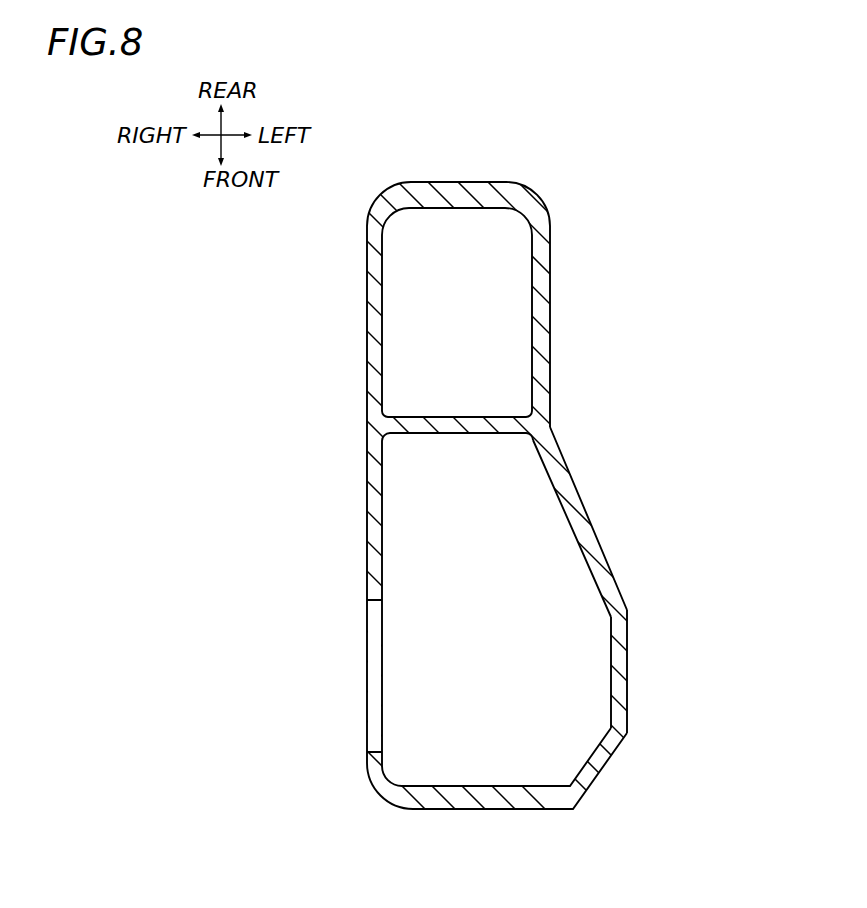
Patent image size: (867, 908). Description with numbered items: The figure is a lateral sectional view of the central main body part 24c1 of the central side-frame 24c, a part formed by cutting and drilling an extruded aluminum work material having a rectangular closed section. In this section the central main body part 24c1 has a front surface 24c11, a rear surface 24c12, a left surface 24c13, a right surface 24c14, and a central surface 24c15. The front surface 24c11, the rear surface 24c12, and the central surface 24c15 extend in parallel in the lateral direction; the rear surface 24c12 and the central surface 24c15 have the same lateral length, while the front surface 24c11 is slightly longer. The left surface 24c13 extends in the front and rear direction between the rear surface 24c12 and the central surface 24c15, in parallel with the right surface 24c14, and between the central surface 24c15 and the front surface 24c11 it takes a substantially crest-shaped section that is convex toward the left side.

The central main body part 24c1 is at (479, 454).
The central side-frame 24c is at (479, 454).
The front surface 24c11 is at (495, 811).
The rear surface 24c12 is at (459, 184).
The left surface 24c13 is at (583, 505).
The right surface 24c14 is at (367, 531).
The central surface 24c15 is at (470, 415).